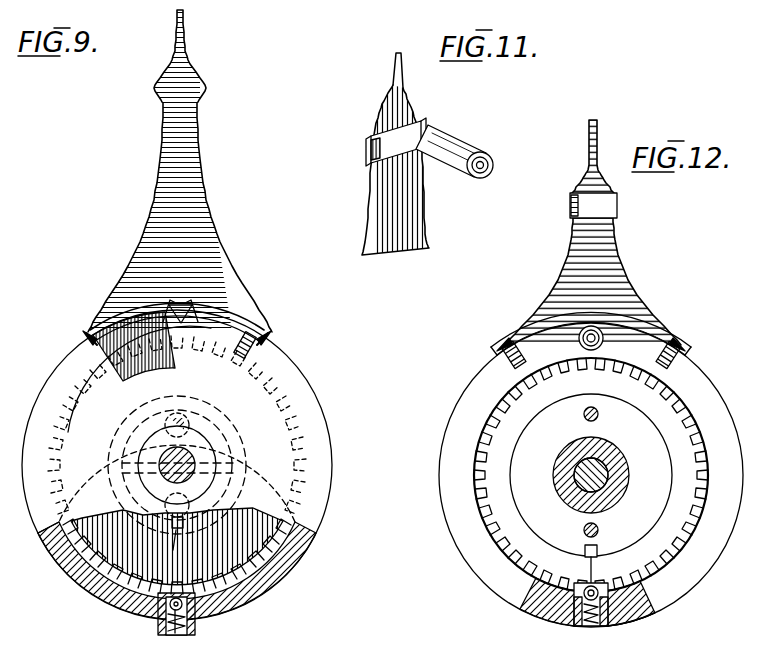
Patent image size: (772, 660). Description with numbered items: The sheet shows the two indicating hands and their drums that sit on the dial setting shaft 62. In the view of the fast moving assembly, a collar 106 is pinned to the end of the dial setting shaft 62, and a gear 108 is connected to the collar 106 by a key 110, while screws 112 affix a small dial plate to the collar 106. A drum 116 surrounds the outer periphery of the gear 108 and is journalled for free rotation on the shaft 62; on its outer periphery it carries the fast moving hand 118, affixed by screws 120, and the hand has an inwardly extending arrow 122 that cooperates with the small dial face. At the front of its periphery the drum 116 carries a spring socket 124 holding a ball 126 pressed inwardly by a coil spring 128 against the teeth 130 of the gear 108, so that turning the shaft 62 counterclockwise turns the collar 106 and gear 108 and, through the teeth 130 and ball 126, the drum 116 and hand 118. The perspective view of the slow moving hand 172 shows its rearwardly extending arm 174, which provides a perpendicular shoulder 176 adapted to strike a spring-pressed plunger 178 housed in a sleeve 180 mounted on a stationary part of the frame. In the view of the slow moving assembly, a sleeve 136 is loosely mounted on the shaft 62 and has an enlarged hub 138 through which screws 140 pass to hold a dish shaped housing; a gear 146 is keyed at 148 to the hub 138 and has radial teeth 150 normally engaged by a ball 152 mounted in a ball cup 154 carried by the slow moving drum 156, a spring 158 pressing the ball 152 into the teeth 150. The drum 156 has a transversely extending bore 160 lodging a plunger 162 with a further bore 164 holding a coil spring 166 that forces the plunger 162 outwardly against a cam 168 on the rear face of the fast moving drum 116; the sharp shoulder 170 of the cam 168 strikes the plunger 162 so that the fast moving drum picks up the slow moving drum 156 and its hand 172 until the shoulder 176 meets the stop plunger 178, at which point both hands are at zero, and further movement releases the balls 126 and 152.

In FIG. 9, the dial setting shaft 62 is at (193, 457).
In FIG. 12, the dial setting shaft 62 is at (597, 470).
In FIG. 9, the collar 106 is at (178, 400).
In FIG. 9, the gear 108 is at (258, 527).
In FIG. 9, the key 110 is at (174, 531).
In FIG. 9, the screws 112 is at (192, 415).
In FIG. 9, the drum 116 is at (293, 567).
In FIG. 9, the fast moving hand 118 is at (197, 157).
In FIG. 9, the screws 120 is at (90, 328).
In FIG. 9, the inwardly extending arrow 122 is at (187, 302).
In FIG. 9, the spring socket 124 is at (196, 630).
In FIG. 9, the ball 126 is at (177, 546).
In FIG. 9, the coil spring 128 is at (173, 633).
In FIG. 9, the teeth 130 is at (78, 583).
In FIG. 12, the sleeve 136 is at (615, 478).
In FIG. 12, the hub 138 is at (522, 474).
In FIG. 12, the screws 140 is at (583, 414).
In FIG. 12, the gear 146 is at (670, 522).
In FIG. 12, the key 148 is at (598, 548).
In FIG. 12, the radial teeth 150 is at (667, 560).
In FIG. 12, the ball 152 is at (594, 581).
In FIG. 12, the ball cup 154 is at (613, 623).
In FIG. 12, the drum 156 is at (558, 623).
In FIG. 12, the spring 158 is at (600, 642).
In FIG. 12, the transversely extending bore 160 is at (620, 328).
In FIG. 12, the plunger 162 is at (602, 341).
In FIG. 12, the bore 164 is at (579, 339).
In FIG. 12, the coil spring 166 is at (580, 345).
In FIG. 9, the cam 168 is at (278, 372).
In FIG. 9, the cam shoulder 170 is at (197, 322).
In FIG. 11, the slow moving hand 172 is at (378, 210).
In FIG. 12, the slow moving hand 172 is at (623, 262).
In FIG. 11, the rearwardly extending arm 174 is at (403, 153).
In FIG. 12, the rearwardly extending arm 174 is at (571, 208).
In FIG. 11, the perpendicular shoulder 176 is at (418, 130).
In FIG. 12, the perpendicular shoulder 176 is at (621, 208).
In FIG. 11, the spring-pressed plunger 178 is at (432, 135).
In FIG. 11, the sleeve 180 is at (455, 142).